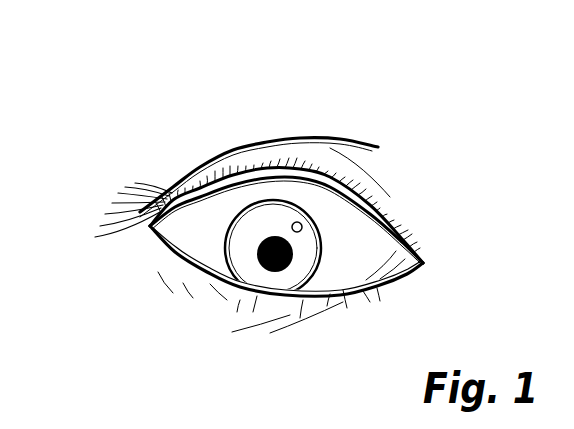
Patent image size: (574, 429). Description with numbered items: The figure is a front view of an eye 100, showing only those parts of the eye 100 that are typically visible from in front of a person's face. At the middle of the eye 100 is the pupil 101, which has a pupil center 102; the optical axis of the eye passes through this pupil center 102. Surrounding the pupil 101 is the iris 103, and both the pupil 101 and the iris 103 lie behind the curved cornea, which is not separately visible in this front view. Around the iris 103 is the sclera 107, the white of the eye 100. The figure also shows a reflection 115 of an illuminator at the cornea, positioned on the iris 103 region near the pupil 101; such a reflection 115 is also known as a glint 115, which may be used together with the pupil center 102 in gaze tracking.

The eye 100 is at (170, 134).
The pupil 101 is at (276, 255).
The pupil center 102 is at (275, 258).
The iris 103 is at (253, 232).
The sclera 107 is at (343, 247).
The reflection (glint) 115 is at (301, 223).